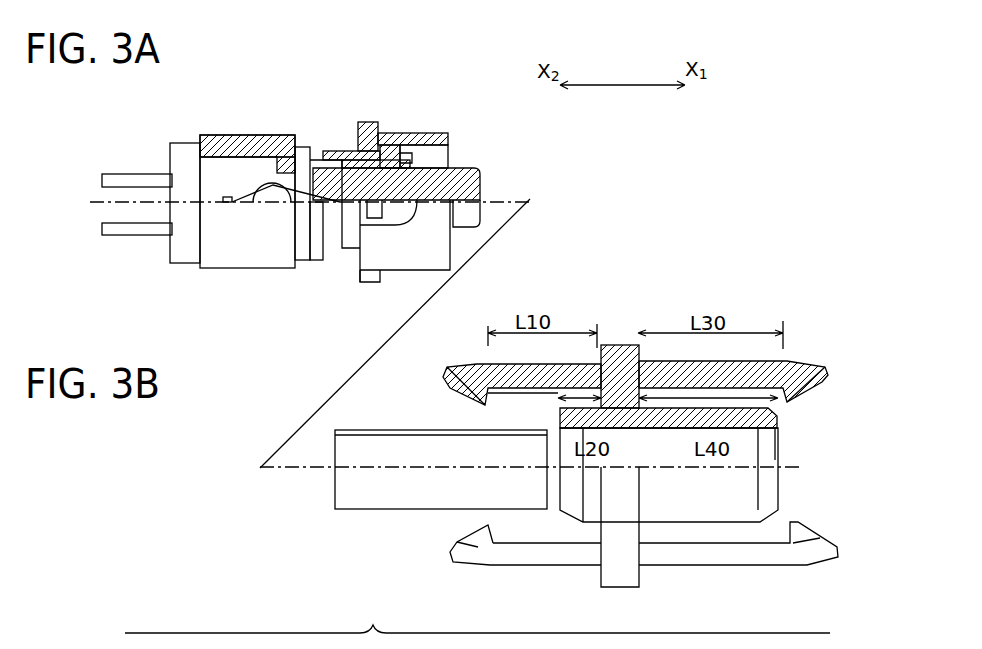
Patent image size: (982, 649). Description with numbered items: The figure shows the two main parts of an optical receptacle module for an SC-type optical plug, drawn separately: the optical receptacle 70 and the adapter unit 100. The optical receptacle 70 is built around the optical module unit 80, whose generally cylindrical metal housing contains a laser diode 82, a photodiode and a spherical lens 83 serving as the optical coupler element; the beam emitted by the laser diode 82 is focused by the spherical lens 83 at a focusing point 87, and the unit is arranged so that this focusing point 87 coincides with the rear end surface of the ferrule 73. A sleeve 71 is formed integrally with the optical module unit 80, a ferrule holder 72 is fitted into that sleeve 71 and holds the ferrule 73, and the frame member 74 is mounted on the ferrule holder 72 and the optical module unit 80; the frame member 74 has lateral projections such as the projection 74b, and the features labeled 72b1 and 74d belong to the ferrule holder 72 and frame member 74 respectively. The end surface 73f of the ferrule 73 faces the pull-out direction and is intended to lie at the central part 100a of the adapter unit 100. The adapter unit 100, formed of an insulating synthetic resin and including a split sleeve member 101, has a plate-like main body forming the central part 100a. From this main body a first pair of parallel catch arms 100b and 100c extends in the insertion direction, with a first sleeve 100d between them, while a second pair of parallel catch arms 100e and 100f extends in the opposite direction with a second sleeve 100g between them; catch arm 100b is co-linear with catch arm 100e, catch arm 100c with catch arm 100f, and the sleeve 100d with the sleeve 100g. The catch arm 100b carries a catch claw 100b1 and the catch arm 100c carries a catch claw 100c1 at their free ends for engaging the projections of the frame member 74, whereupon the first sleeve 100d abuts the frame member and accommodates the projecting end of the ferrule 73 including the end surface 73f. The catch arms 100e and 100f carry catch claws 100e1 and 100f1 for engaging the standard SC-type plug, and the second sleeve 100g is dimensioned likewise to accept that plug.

In FIG. 3A, the optical receptacle 70 is at (280, 62).
In FIG. 3A, the sleeve 71 is at (333, 250).
In FIG. 3A, the ferrule holder 72 is at (317, 145).
In FIG. 3A, the lens holder flange 72b1 is at (368, 122).
In FIG. 3A, the ferrule 73 is at (474, 158).
In FIG. 3A, the end surface of the ferrule 73f is at (480, 187).
In FIG. 3A, the frame member 74 is at (440, 126).
In FIG. 3A, the lateral projection of the frame member 74b is at (358, 151).
In FIG. 3A, the cap top portion 74d is at (388, 133).
In FIG. 3A, the optical module unit 80 is at (290, 122).
In FIG. 3A, the laser diode 82 is at (226, 204).
In FIG. 3A, the spherical lens 83 is at (267, 198).
In FIG. 3A, the focusing point 87 is at (343, 250).
In FIG. 3B, the adapter unit 100 is at (730, 266).
In FIG. 3B, the central part (main body) of the adapter unit 100a is at (619, 345).
In FIG. 3B, the catch arm 100b is at (525, 372).
In FIG. 3B, the catch claw 100b1 is at (467, 380).
In FIG. 3B, the catch arm 100c is at (533, 562).
In FIG. 3B, the catch claw 100c1 is at (458, 543).
In FIG. 3B, the first sleeve 100d is at (573, 407).
In FIG. 3B, the catch arm 100e is at (732, 364).
In FIG. 3B, the catch claw 100e1 is at (810, 377).
In FIG. 3B, the catch arm 100f is at (755, 560).
In FIG. 3B, the catch claw 100f1 is at (817, 538).
In FIG. 3B, the second sleeve 100g is at (747, 405).
In FIG. 3B, the split sleeve member 101 is at (403, 430).